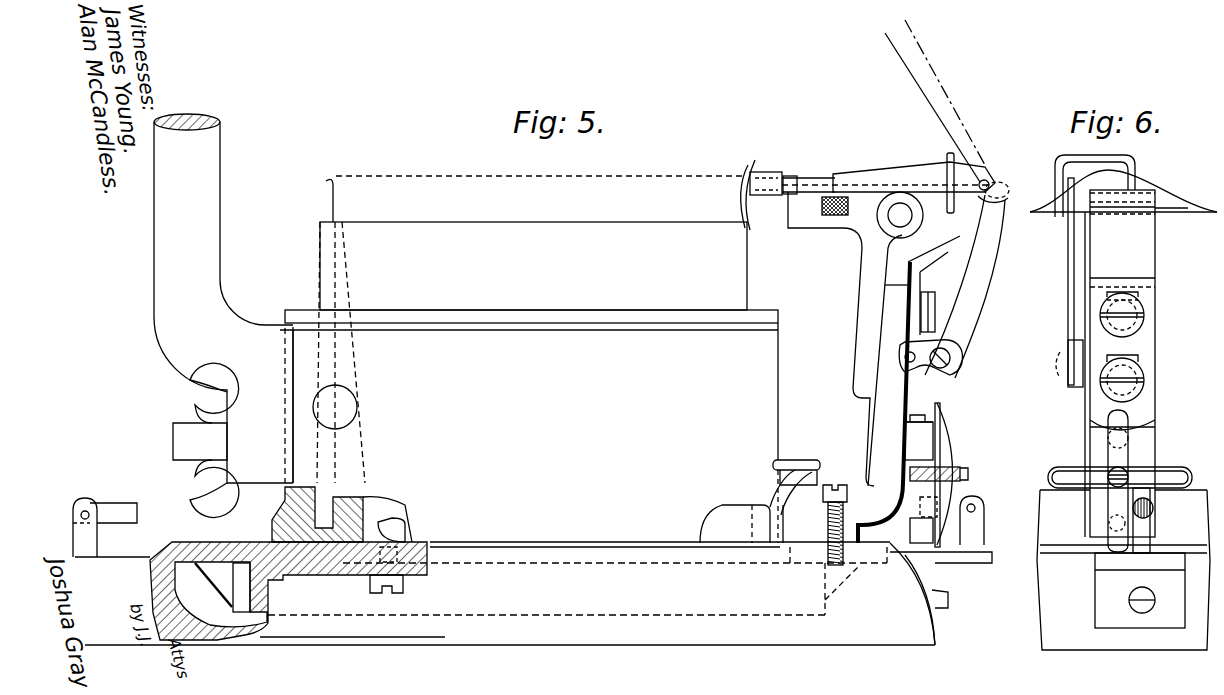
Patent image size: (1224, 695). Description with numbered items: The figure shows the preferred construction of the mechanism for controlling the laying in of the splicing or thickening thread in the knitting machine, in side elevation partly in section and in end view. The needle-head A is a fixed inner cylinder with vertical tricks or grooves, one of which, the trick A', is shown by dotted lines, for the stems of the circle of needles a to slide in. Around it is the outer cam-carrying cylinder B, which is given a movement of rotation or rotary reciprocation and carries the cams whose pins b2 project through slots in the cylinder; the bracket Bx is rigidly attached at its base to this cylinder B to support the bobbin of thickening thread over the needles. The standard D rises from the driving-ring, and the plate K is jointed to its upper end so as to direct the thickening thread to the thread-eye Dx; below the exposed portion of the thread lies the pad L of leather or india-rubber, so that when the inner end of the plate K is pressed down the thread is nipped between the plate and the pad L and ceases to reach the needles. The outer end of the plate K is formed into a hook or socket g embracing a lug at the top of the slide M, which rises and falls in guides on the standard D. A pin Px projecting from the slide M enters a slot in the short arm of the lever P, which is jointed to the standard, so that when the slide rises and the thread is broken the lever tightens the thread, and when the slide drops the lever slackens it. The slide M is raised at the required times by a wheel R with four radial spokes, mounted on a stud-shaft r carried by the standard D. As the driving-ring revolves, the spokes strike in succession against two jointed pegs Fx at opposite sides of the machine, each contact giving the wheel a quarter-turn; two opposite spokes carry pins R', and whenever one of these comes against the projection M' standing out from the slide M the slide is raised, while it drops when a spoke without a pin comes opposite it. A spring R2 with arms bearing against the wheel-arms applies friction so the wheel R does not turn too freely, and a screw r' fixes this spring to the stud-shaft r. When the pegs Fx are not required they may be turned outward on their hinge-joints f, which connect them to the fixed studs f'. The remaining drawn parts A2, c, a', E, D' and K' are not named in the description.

In FIG. 5, the bracket Bx is at (223, 315).
In FIG. 5, the needles a is at (528, 199).
In FIG. 5, the needle-head A is at (533, 266).
In FIG. 5, the trick or groove A' is at (327, 352).
In FIG. 5, the cam-carrying cylinder B is at (525, 426).
In FIG. 5, the base A2 is at (533, 571).
In FIG. 5, the pin c is at (229, 587).
In FIG. 5, the lever a' is at (212, 588).
In FIG. 5, the jointed pegs Fx is at (100, 522).
In FIG. 6, the jointed pegs Fx is at (1182, 528).
In FIG. 5, the hinge-joints f is at (96, 500).
In FIG. 5, the fixed studs f' is at (101, 540).
In FIG. 5, the cam arm E is at (770, 498).
In FIG. 5, the slide D' is at (790, 506).
In FIG. 5, the pins b2 is at (810, 501).
In FIG. 5, the standard D is at (884, 402).
In FIG. 5, the thread-eye Dx is at (765, 182).
In FIG. 5, the plate K is at (876, 206).
In FIG. 5, the lever bar K' is at (914, 116).
In FIG. 5, the hook or socket g is at (1003, 190).
In FIG. 5, the pad L is at (835, 216).
In FIG. 5, the slide M is at (874, 339).
In FIG. 6, the slide M is at (1123, 346).
In FIG. 5, the lever P is at (965, 286).
In FIG. 6, the lever P is at (1068, 275).
In FIG. 5, the pin Px is at (905, 372).
In FIG. 6, the pin Px is at (1068, 372).
In FIG. 5, the projection M' is at (939, 403).
In FIG. 6, the projection M' is at (1108, 481).
In FIG. 5, the wheel R is at (954, 475).
In FIG. 6, the wheel R is at (1110, 475).
In FIG. 5, the pins R' is at (921, 483).
In FIG. 6, the pins R' is at (1108, 479).
In FIG. 5, the stud-shaft r is at (959, 461).
In FIG. 6, the stud-shaft r is at (1118, 473).
In FIG. 5, the screw r' is at (946, 466).
In FIG. 5, the spring R2 is at (962, 488).
In FIG. 6, the spring R2 is at (1125, 450).